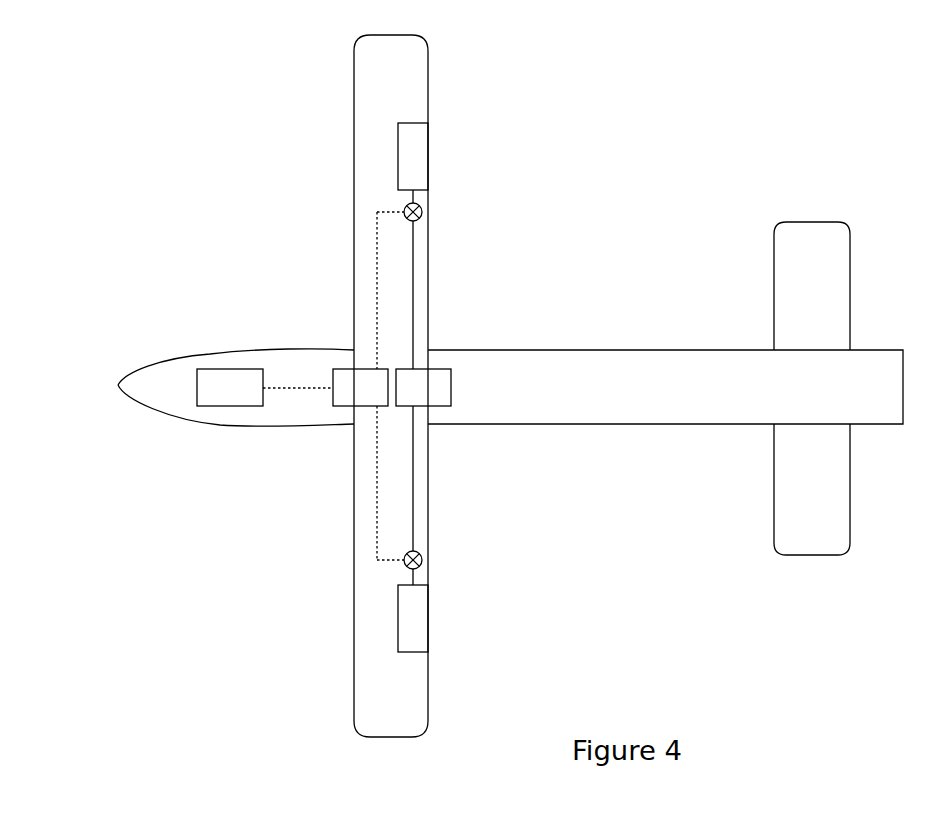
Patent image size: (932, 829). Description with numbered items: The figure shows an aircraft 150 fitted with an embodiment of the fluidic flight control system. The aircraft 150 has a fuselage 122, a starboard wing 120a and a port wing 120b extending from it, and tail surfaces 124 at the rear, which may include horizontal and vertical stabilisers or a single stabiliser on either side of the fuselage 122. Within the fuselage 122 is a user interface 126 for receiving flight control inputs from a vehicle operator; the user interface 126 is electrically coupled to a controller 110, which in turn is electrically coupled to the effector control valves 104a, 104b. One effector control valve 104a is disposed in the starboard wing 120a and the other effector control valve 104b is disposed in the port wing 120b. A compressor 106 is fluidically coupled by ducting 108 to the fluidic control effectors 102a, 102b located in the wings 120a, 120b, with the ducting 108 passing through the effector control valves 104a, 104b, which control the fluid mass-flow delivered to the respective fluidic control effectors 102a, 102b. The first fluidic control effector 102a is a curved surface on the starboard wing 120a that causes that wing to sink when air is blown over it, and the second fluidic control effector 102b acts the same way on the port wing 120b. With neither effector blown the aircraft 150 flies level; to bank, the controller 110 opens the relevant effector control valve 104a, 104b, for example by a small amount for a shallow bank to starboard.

The aircraft 150 is at (192, 165).
The starboard wing 120a is at (428, 70).
The port wing 120b is at (428, 690).
The first fluidic control effector 102a is at (417, 152).
The second fluidic control effector 102b is at (417, 612).
The effector control valve 104a is at (422, 207).
The effector control valve 104b is at (422, 557).
The ducting 108 is at (413, 274).
The compressor 106 is at (440, 369).
The controller 110 is at (345, 369).
The user interface 126 is at (208, 369).
The fuselage 122 is at (592, 424).
The tail surfaces 124 is at (826, 222).